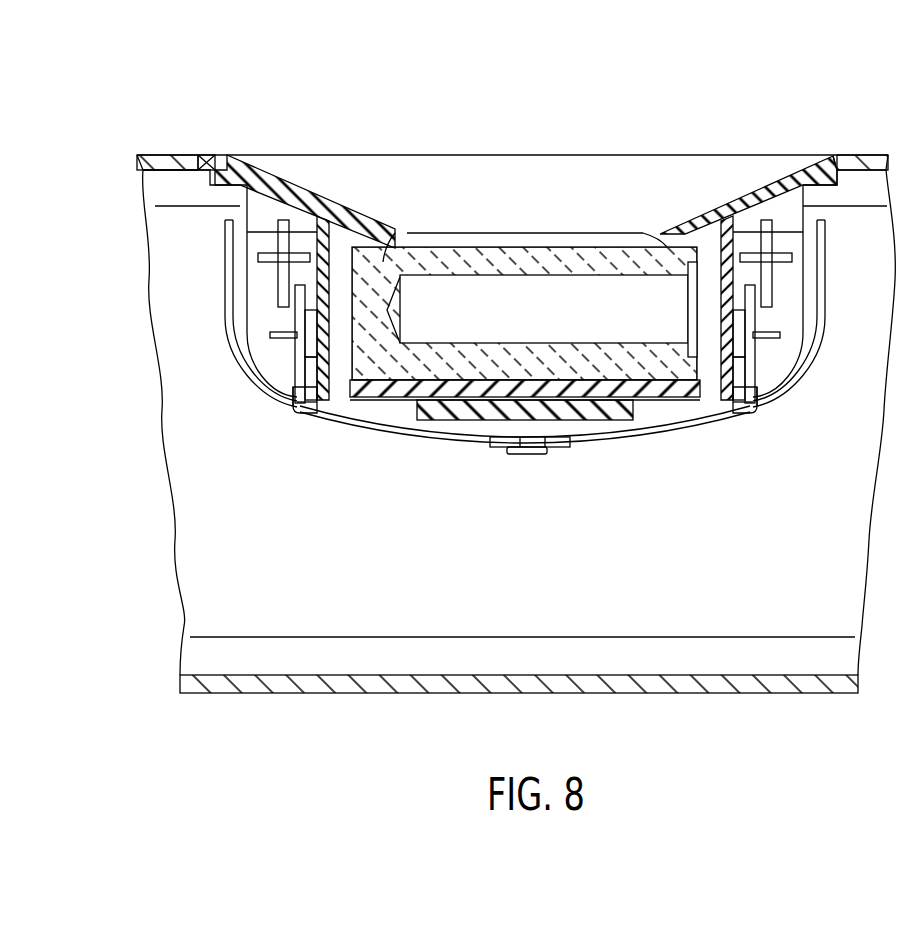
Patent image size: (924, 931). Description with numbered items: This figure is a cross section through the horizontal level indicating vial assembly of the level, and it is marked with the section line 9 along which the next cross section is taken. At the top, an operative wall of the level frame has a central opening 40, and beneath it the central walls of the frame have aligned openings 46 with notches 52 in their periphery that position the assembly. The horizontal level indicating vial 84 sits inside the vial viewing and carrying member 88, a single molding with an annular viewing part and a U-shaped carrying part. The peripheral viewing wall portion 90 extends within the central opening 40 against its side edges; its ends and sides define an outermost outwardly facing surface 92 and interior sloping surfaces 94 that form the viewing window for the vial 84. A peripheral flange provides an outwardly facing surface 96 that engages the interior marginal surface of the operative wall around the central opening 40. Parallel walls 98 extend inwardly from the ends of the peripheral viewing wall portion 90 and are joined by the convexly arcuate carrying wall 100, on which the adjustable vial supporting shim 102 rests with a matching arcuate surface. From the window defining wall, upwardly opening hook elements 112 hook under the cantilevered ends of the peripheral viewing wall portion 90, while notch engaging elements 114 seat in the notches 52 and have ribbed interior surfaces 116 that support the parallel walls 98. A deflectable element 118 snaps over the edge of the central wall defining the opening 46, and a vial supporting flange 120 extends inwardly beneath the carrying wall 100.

The section line 9- 9 is at (523, 138).
The central opening 40 is at (212, 155).
The openings 46 is at (237, 287).
The notches 52 is at (303, 417).
The horizontal level indicating vial 84 is at (385, 250).
The vial viewing and carrying member 88 is at (303, 177).
The peripheral viewing wall portion 90 is at (225, 155).
The outermost outwardly facing surface 92 is at (833, 157).
The interior sloping surfaces 94 is at (330, 218).
The outwardly facing surface 96 is at (198, 155).
The parallel walls 98 is at (723, 252).
The carrying wall 100 is at (480, 407).
The adjustable vial supporting shim 102 is at (417, 392).
The hook elements 112 is at (283, 251).
The notch engaging elements 114 is at (300, 347).
The interior surfaces 116 is at (330, 392).
The deflectable element 118 is at (523, 446).
The vial supporting flange 120 is at (575, 434).